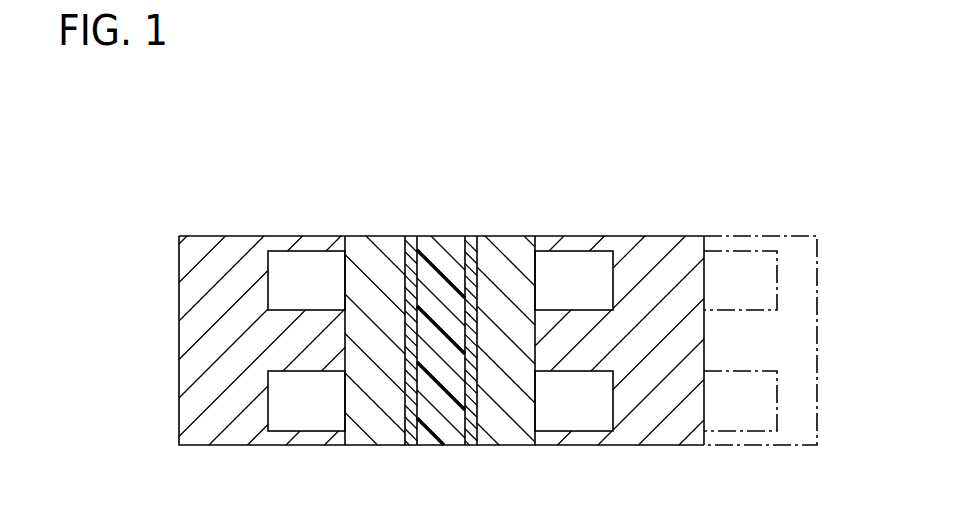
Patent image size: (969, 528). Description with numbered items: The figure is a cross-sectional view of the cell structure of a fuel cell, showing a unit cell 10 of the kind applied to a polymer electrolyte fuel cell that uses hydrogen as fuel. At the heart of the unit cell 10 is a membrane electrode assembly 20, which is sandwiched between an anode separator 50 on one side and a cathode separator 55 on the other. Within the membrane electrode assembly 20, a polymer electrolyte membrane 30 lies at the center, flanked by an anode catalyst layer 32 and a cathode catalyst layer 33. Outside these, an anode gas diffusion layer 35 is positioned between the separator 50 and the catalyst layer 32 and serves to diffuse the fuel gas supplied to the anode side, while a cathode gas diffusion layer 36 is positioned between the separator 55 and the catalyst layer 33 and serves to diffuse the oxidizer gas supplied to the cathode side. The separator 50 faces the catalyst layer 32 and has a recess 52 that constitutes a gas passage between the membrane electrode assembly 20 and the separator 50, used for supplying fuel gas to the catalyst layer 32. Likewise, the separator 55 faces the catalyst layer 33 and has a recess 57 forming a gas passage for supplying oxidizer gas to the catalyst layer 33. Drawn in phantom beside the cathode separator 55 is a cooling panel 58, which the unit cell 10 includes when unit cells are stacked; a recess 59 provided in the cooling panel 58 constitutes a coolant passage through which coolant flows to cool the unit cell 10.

The unit cell 10 is at (193, 172).
The membrane electrode assembly 20 is at (582, 180).
The polymer electrolyte membrane 30 is at (440, 234).
The catalyst layer 32 is at (401, 243).
The catalyst layer 33 is at (488, 242).
The gas diffusion layer 35 is at (352, 234).
The gas diffusion layer 36 is at (510, 235).
The separator 50 is at (252, 446).
The recess 52 is at (270, 399).
The separator 55 is at (652, 448).
The recess 57 is at (613, 406).
The cooling panel 58 is at (790, 449).
The recess 59 is at (776, 402).